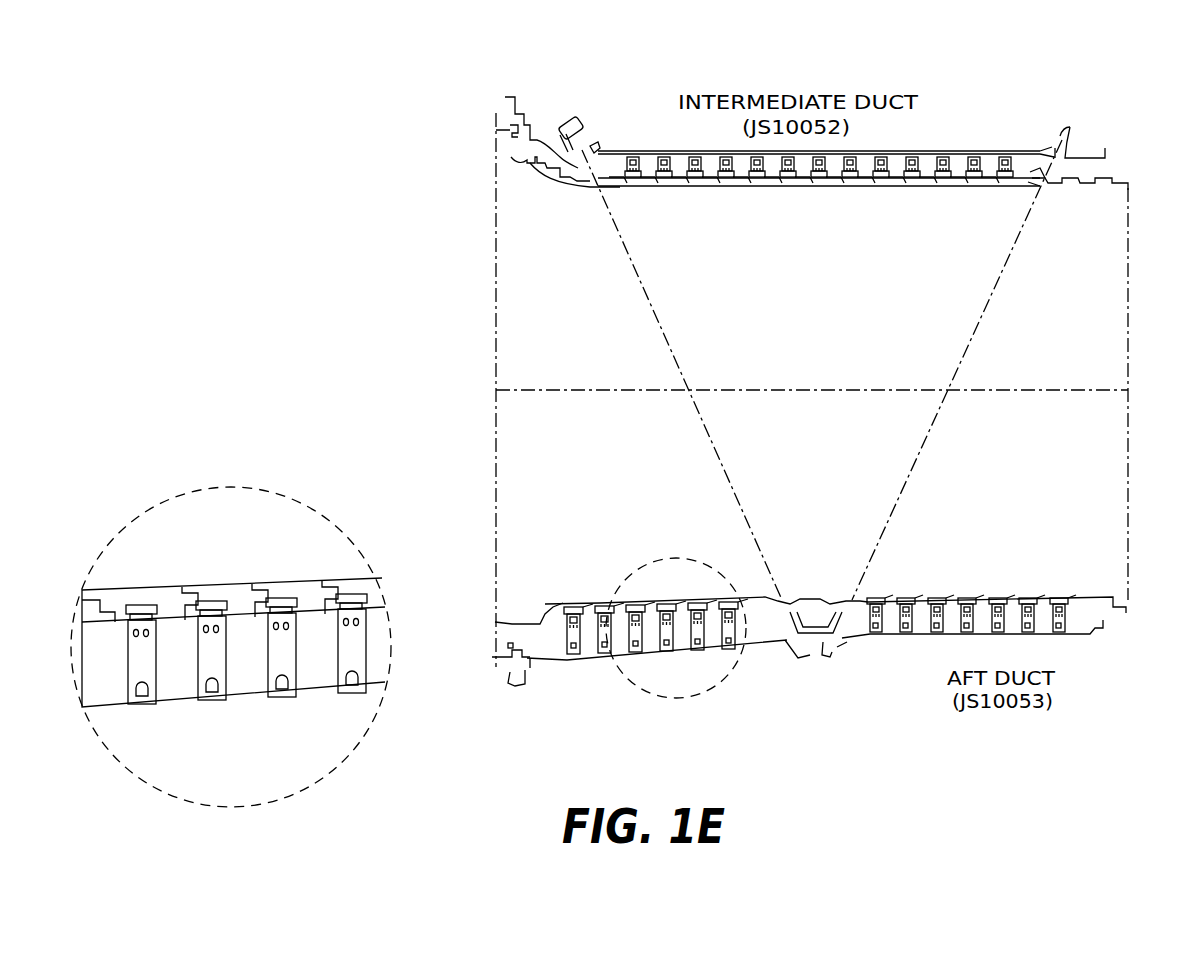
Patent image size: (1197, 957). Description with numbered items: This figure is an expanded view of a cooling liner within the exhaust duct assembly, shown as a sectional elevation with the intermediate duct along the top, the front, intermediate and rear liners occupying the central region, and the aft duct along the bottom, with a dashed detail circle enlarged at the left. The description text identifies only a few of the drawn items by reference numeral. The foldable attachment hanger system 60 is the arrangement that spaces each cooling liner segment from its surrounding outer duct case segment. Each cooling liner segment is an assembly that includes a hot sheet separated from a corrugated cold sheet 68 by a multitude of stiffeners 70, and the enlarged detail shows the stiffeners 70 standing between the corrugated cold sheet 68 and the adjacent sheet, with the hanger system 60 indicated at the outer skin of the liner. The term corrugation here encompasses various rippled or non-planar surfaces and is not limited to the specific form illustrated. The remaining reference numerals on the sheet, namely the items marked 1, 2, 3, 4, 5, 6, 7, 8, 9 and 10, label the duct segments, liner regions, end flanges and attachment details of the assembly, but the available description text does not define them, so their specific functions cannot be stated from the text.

The forward attachment hook 1 is at (548, 668).
The intermediate duct 2 is at (935, 151).
The aft duct 3 is at (1070, 635).
The front liner 4 is at (564, 369).
The intermediate liner 5 is at (976, 240).
The rear liner 6 is at (1078, 497).
The forward duct flange 7 is at (505, 97).
The duct mounting lug 8 is at (584, 126).
The aft duct flange 9 is at (1070, 127).
The forward end of aft duct 10 is at (547, 620).
The foldable attachment hanger system 60 is at (258, 584).
The corrugated cold sheet 68 is at (240, 600).
The stiffeners 70 is at (184, 603).